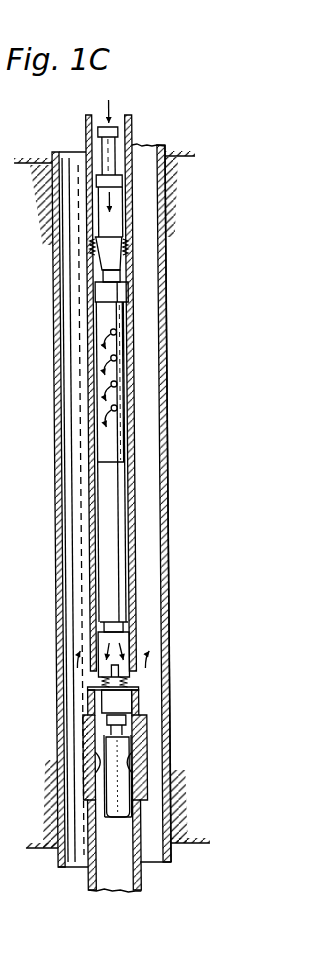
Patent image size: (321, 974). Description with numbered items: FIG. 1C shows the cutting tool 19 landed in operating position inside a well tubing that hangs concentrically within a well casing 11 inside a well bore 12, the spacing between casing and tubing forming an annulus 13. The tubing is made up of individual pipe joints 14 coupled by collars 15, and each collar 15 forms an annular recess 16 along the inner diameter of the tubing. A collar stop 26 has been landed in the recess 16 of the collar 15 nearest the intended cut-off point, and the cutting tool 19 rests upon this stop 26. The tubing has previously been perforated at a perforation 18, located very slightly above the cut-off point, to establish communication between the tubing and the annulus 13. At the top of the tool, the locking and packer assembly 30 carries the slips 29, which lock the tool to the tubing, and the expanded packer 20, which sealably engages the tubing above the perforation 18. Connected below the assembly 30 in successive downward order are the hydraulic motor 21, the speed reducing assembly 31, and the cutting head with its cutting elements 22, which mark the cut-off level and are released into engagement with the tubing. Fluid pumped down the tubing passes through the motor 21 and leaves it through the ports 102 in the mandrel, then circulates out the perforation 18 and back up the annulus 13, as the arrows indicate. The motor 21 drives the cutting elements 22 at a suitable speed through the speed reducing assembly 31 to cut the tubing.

The well casing 11 is at (170, 583).
The well bore 12 is at (167, 603).
The annulus 13 is at (147, 555).
The pipe joint 14 is at (140, 884).
The collar 15 is at (144, 724).
The annular recess 16 is at (145, 750).
The perforation 18 is at (132, 671).
The cutting tool 19 is at (126, 486).
The packer 20 is at (127, 290).
The hydraulic motor 21 is at (121, 435).
The cutting elements 22 is at (140, 688).
The collar stop 26 is at (128, 794).
The slips 29 is at (125, 254).
The locking and packer assembly 30 is at (124, 193).
The speed reducing assembly 31 is at (129, 525).
The ports 102 is at (116, 333).